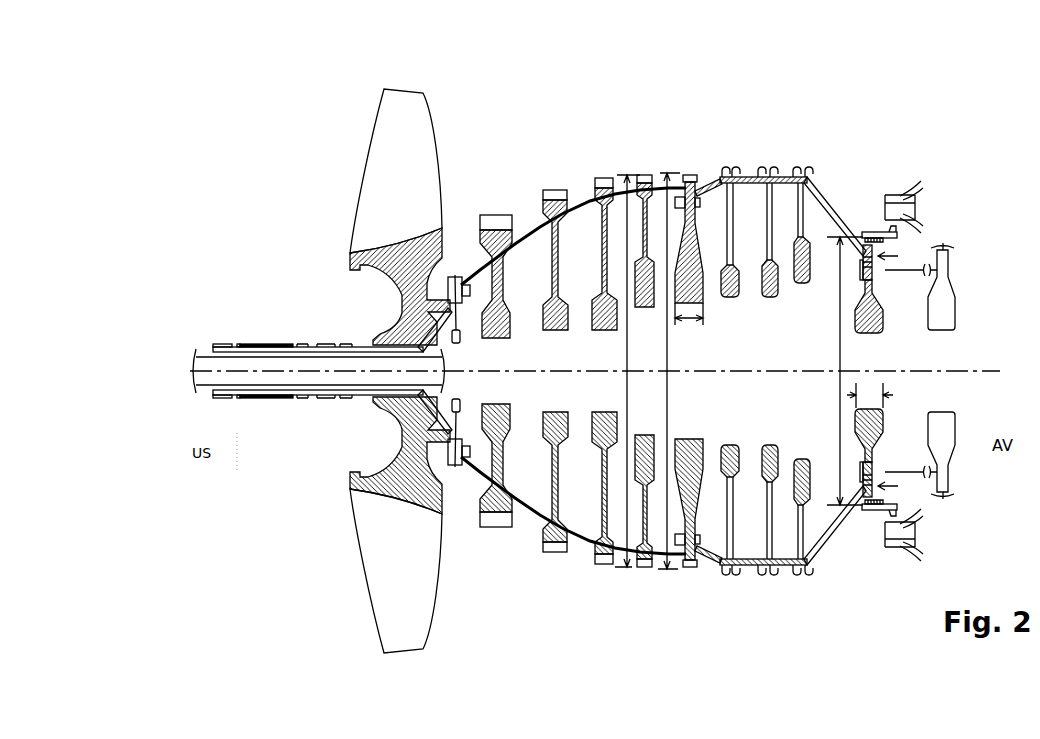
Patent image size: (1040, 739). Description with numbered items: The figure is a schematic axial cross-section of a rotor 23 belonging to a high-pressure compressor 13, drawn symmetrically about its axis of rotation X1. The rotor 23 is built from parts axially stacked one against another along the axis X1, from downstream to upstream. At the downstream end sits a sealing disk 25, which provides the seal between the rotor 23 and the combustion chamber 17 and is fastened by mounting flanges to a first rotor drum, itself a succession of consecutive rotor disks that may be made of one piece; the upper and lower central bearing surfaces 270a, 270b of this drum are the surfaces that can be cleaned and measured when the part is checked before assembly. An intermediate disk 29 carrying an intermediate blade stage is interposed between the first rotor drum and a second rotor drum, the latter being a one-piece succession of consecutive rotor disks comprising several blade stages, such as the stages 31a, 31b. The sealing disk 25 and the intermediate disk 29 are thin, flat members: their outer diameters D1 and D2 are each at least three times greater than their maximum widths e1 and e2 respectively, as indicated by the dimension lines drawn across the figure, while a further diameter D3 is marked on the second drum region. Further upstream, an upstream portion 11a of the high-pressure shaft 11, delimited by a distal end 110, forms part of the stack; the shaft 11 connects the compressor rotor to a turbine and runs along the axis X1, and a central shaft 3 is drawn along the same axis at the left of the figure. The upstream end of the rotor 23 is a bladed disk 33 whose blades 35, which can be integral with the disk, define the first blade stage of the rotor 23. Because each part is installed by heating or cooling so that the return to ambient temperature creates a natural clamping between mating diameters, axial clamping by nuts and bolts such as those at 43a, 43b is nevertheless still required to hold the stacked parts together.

The blades 35 is at (407, 156).
The bladed disk 33 is at (405, 288).
The distal end 110 is at (214, 347).
The upstream portion of the high-pressure shaft 11a is at (275, 347).
The high-pressure shaft 11 is at (318, 344).
The shaft 3 is at (279, 387).
The rotor 23 is at (618, 183).
The intermediate disk 29 is at (686, 172).
The bearing surface 270a is at (711, 182).
The high-pressure compressor 13 is at (832, 170).
The combustion chamber 17 is at (897, 194).
The blade stage 31a is at (500, 280).
The blade stage 31b is at (553, 232).
The bearing surface 270b is at (862, 256).
The sealing disk 25 is at (856, 316).
The axis of rotation X1 is at (765, 369).
The outer diameter of the sealing disk D1 is at (841, 371).
The outer diameter of the intermediate disk D2 is at (661, 371).
The diameter D3 is at (621, 371).
The maximum width of the sealing disk e1 is at (870, 392).
The maximum width of the intermediate disk e2 is at (689, 326).
The nuts and bolts 43a is at (684, 541).
The nuts and bolts 43b is at (720, 545).